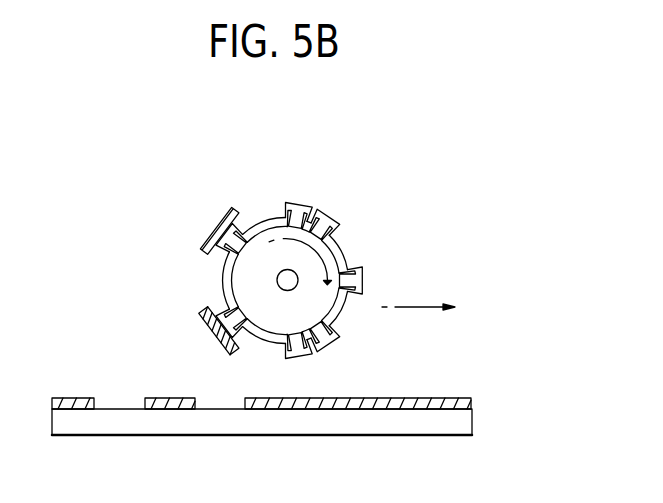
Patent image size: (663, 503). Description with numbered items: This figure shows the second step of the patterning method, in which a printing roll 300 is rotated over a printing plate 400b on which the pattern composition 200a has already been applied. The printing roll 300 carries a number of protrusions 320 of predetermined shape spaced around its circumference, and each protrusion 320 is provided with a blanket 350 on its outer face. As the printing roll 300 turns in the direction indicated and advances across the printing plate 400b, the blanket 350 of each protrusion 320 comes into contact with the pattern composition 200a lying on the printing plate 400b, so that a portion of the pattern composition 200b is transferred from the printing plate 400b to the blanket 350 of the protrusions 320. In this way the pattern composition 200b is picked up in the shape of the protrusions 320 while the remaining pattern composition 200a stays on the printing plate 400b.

The printing roll 300 is at (237, 279).
The protrusions 320 is at (318, 214).
The blanket 350 is at (365, 272).
The pattern composition 200b is at (229, 209).
The pattern composition 200a is at (70, 398).
The printing plate 400b is at (474, 420).